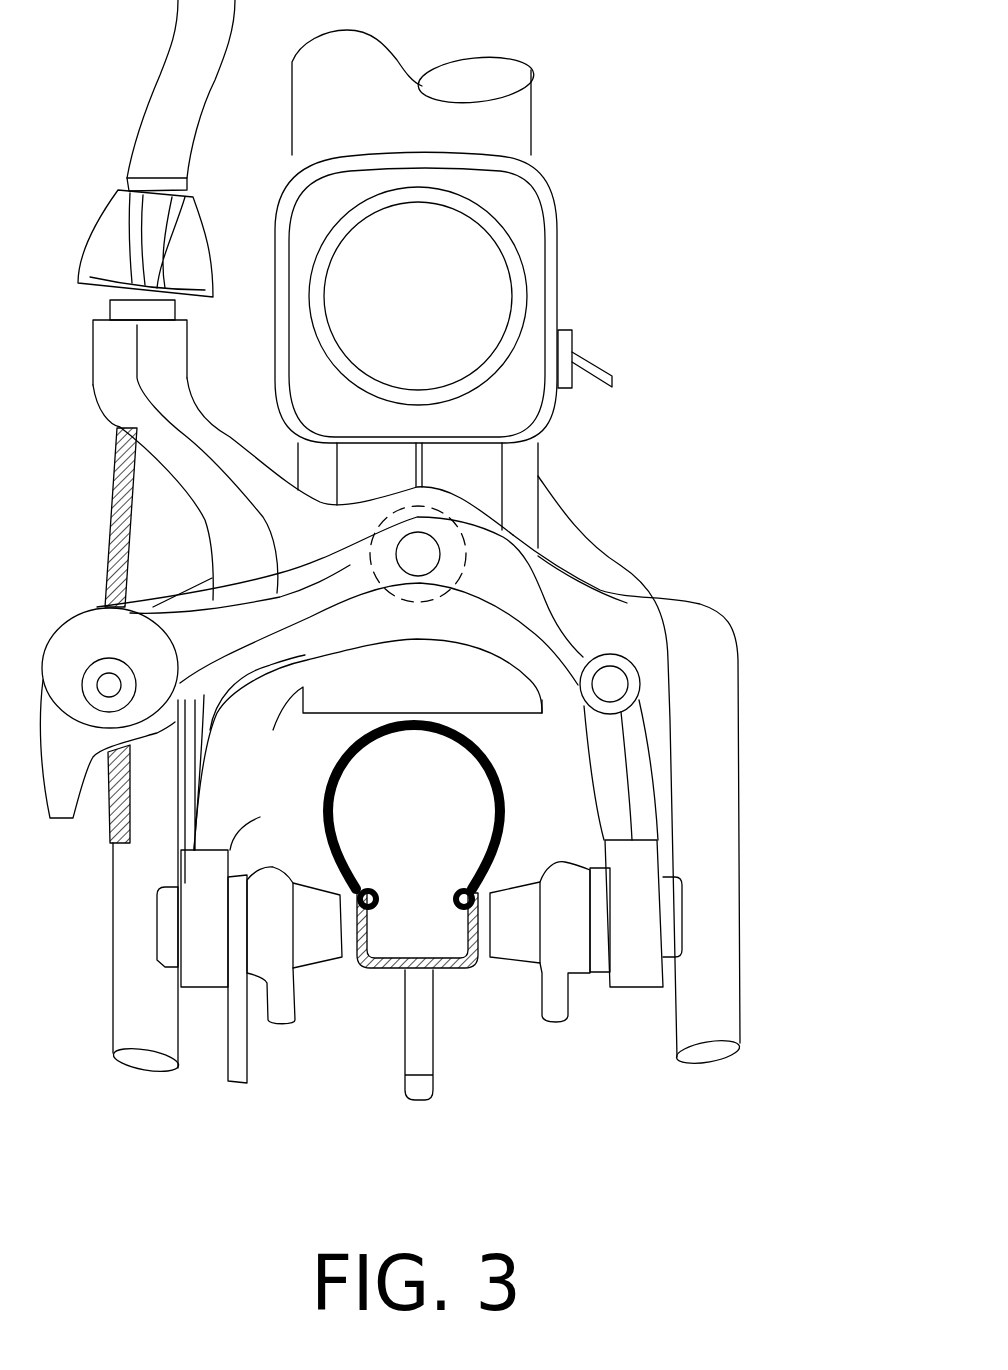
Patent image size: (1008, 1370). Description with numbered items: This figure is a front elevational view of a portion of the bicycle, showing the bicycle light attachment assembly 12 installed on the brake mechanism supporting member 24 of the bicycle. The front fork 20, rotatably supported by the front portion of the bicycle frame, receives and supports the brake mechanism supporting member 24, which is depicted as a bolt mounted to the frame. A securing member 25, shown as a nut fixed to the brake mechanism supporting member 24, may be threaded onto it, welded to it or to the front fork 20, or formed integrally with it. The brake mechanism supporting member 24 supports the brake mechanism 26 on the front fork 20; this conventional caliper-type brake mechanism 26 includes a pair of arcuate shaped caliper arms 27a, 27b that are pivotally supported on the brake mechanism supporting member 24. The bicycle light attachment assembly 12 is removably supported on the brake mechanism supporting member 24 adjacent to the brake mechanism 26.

The front fork 20 is at (513, 117).
The bicycle light attachment assembly 12 is at (560, 263).
The brake mechanism supporting member 24 is at (455, 535).
The securing member 25 is at (465, 563).
The brake mechanism 26 is at (672, 710).
The caliper arm 27a is at (633, 633).
The caliper arm 27b is at (190, 428).